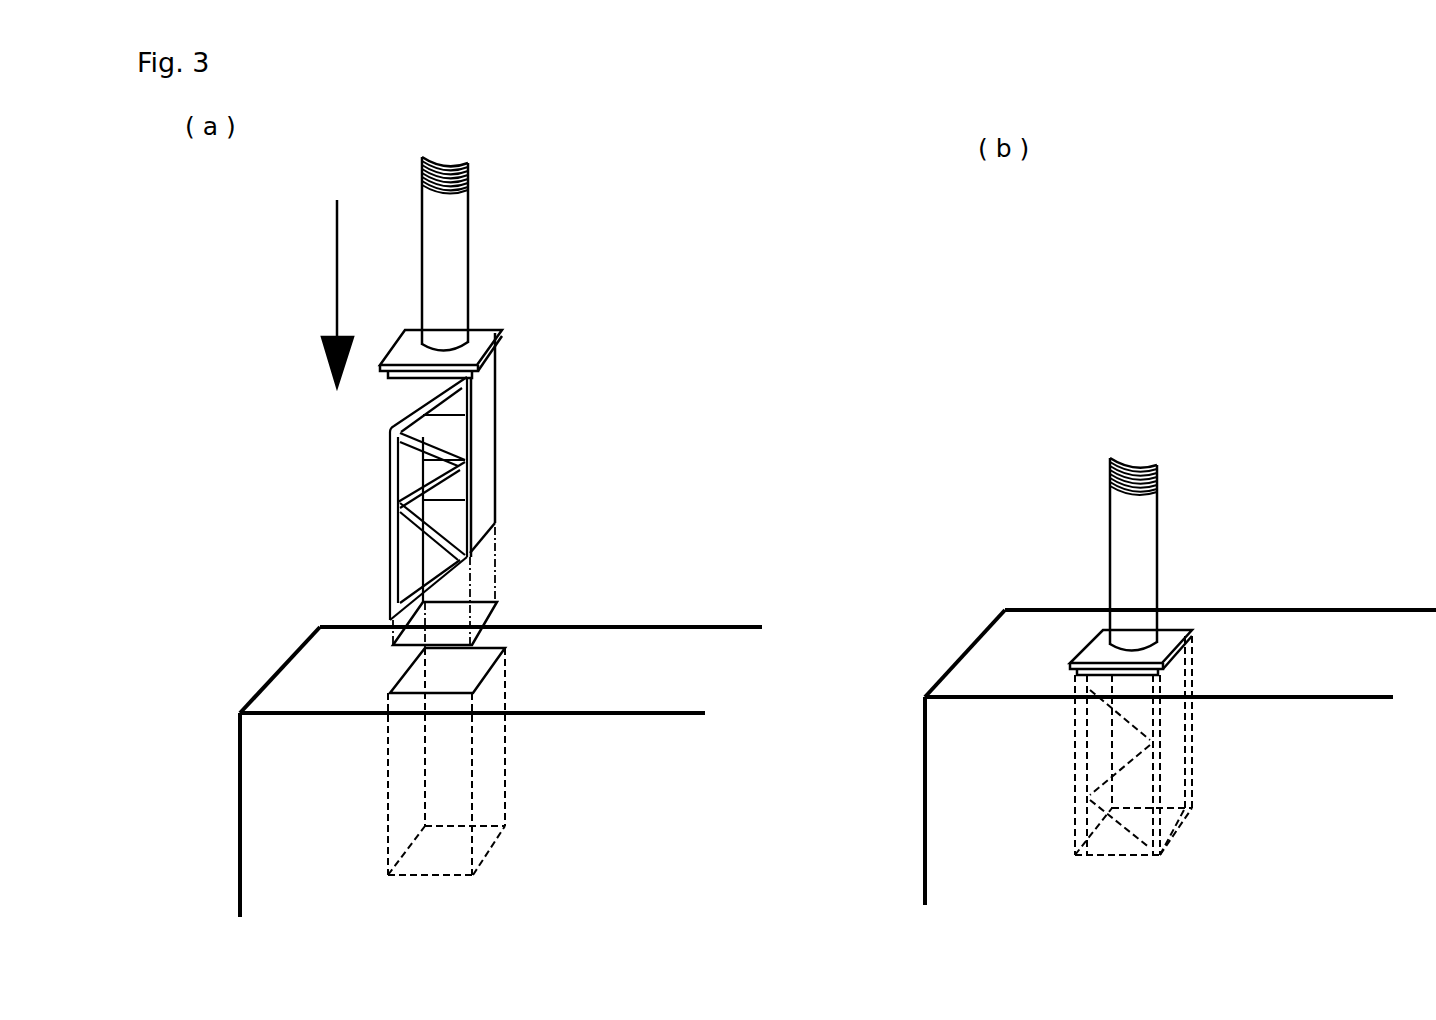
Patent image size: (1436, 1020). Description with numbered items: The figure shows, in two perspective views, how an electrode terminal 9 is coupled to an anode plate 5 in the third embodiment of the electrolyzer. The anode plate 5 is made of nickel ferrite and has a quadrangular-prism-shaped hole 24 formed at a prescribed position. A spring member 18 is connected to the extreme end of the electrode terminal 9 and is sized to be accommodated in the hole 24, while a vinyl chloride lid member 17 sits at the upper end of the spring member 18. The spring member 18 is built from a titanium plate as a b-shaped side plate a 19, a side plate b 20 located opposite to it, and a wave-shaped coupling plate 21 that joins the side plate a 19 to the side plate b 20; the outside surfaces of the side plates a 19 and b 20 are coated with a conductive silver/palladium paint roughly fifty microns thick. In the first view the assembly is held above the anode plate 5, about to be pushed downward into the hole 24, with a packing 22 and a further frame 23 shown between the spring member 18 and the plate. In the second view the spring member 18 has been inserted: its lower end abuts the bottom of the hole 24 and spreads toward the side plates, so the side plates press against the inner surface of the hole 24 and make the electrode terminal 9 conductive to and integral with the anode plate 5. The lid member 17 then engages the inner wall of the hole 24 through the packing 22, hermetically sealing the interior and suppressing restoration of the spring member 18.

The anode plate 5 is at (693, 648).
The electrode terminal 9 is at (458, 212).
The lid member 17 is at (477, 342).
The spring member 18 is at (796, 594).
The side plate a 19 is at (487, 387).
The side plate b 20 is at (405, 545).
The coupling plate 21 is at (395, 448).
The packing 22 is at (500, 612).
The lower guide frame 23 is at (500, 680).
The hole 24 is at (505, 763).